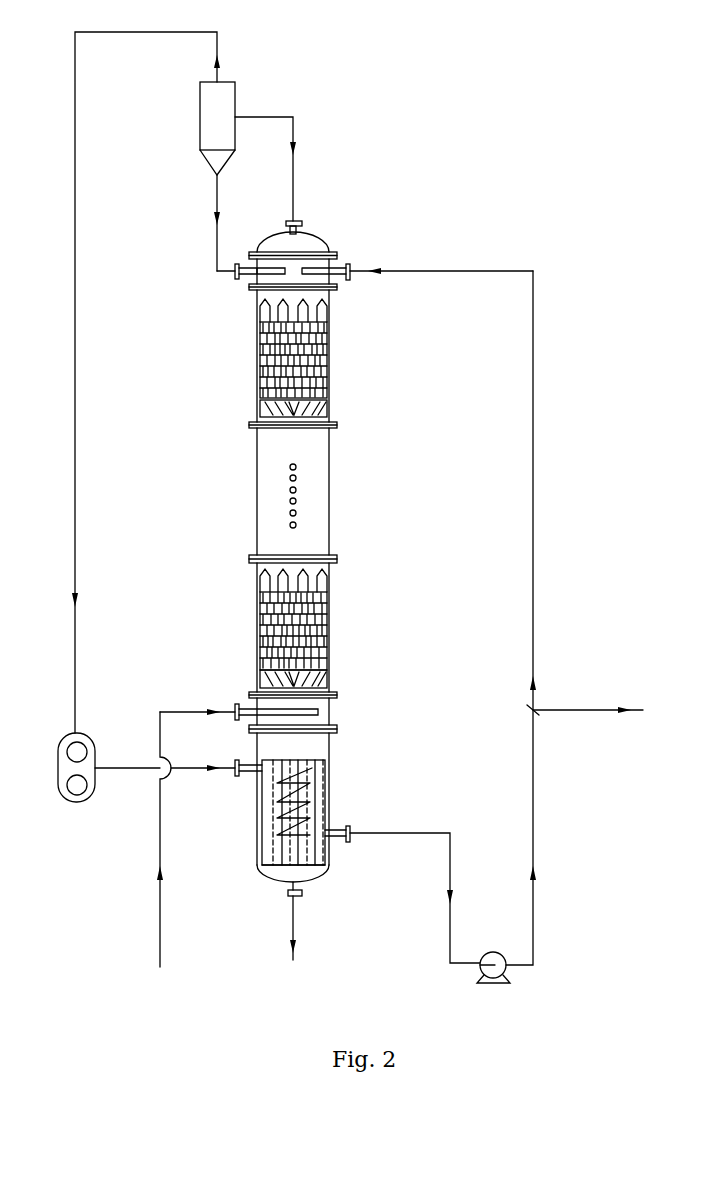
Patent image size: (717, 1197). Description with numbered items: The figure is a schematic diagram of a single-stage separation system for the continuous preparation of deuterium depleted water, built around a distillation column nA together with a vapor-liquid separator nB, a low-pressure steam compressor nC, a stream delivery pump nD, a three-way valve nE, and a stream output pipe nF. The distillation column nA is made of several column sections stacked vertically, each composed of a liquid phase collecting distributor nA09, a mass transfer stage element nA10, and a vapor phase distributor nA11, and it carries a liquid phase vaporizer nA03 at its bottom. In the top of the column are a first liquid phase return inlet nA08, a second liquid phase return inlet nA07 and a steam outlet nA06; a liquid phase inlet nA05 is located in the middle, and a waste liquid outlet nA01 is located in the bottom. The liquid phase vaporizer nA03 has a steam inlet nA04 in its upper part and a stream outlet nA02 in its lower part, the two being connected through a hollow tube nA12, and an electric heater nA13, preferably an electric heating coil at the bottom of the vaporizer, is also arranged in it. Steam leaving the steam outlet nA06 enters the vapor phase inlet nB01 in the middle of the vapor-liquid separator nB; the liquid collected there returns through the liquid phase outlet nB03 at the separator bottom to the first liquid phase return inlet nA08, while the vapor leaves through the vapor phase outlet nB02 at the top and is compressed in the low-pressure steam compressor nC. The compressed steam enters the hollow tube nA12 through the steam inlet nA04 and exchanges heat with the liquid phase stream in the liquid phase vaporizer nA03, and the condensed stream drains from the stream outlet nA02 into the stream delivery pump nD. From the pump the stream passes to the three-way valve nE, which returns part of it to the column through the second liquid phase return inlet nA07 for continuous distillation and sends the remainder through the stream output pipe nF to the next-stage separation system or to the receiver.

The distillation column nA is at (318, 497).
The waste liquid outlet nA01 is at (318, 921).
The stream outlet nA02 is at (350, 833).
The liquid phase vaporizer nA03 is at (326, 788).
The steam inlet nA04 is at (237, 772).
The liquid phase inlet nA05 is at (237, 703).
The steam outlet nA06 is at (300, 222).
The second liquid phase return inlet nA07 is at (352, 266).
The first liquid phase return inlet nA08 is at (237, 276).
The liquid phase collecting distributor nA09 is at (318, 305).
The mass transfer stage element nA10 is at (318, 343).
The vapor phase distributor nA11 is at (329, 404).
The hollow tube nA12 is at (278, 820).
The electric heater nA13 is at (283, 865).
The vapor-liquid separator nB is at (235, 82).
The vapor phase inlet nB01 is at (235, 117).
The vapor phase outlet nB02 is at (218, 80).
The liquid phase outlet nB03 is at (210, 176).
The low-pressure steam compressor nC is at (67, 770).
The stream delivery pump nD is at (500, 977).
The three-way valve nE is at (527, 716).
The stream output pipe nF is at (589, 700).